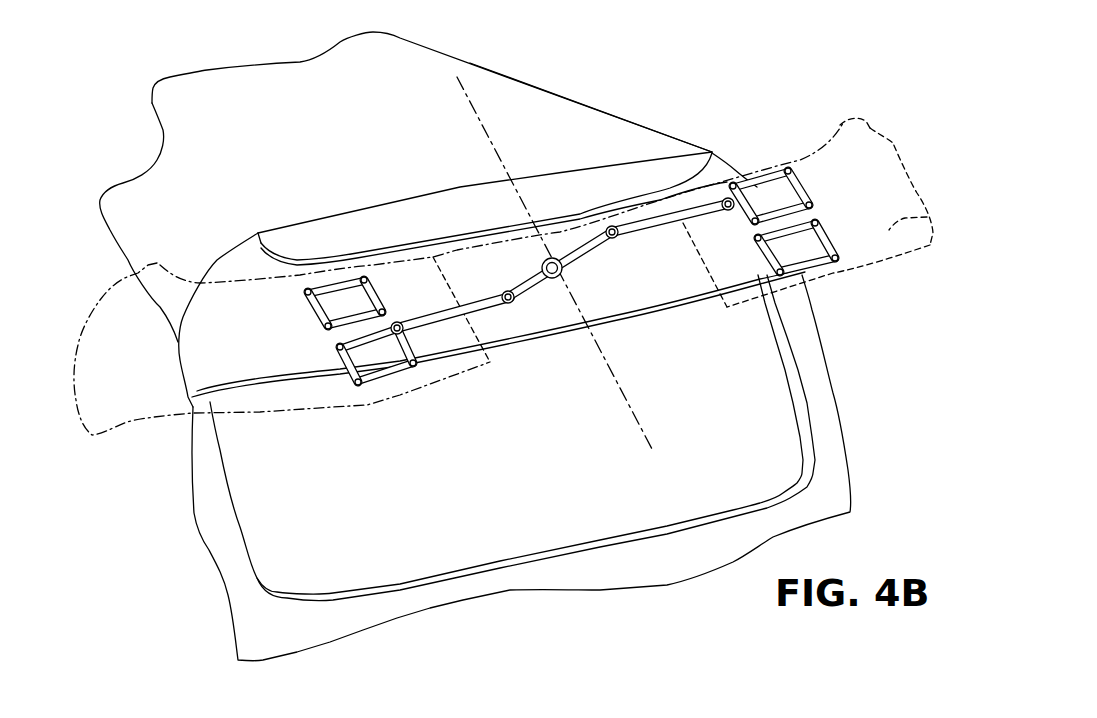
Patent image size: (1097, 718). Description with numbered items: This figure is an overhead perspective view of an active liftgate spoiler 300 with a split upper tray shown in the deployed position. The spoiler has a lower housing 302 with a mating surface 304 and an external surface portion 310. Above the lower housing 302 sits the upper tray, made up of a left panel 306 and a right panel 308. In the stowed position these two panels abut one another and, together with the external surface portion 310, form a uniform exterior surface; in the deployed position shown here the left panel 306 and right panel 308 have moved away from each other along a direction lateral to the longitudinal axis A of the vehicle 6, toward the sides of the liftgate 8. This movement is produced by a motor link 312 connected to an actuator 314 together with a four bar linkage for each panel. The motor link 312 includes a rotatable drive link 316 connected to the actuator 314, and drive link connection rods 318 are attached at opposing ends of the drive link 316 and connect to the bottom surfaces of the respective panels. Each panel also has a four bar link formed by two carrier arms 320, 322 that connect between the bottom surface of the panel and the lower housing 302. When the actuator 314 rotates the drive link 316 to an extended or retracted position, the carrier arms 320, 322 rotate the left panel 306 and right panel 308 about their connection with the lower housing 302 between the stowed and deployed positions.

The active liftgate spoiler 300 is at (836, 84).
The vehicle 6 is at (563, 110).
The longitudinal axis A is at (483, 122).
The liftgate 8 is at (813, 377).
The lower housing 302 is at (728, 168).
The mating surface 304 is at (628, 290).
The left panel 306 is at (131, 413).
The right panel 308 is at (930, 214).
The external surface portion 310 is at (310, 240).
The motor link 312 is at (563, 244).
The actuator 314 is at (547, 260).
The drive link 316 is at (523, 298).
The drive link connection rod 318 is at (437, 312).
The carrier arm 320 is at (340, 353).
The carrier arm 322 is at (305, 300).